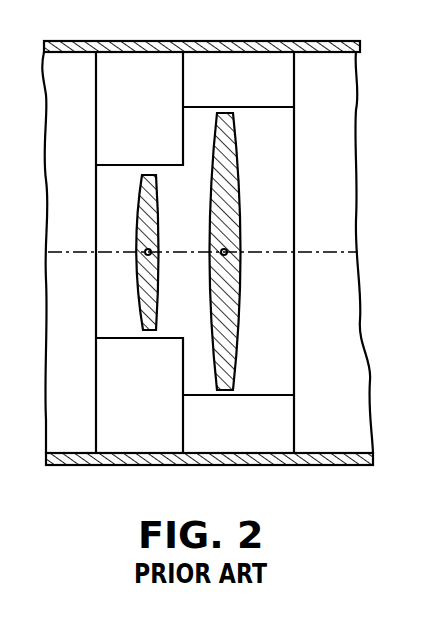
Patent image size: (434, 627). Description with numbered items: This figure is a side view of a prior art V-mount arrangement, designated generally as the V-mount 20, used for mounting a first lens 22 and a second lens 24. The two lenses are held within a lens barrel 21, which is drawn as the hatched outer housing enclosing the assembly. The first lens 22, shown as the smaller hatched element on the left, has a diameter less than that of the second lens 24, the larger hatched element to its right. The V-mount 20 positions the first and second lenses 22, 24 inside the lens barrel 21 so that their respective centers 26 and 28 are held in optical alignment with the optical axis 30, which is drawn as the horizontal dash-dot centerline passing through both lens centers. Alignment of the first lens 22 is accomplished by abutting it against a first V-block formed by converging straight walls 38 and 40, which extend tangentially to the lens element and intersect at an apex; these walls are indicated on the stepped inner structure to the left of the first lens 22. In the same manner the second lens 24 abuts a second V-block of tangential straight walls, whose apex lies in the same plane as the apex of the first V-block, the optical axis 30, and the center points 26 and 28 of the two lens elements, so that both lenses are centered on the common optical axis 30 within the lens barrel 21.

The V-mount arrangement 20 is at (310, 116).
The lens barrel 21 is at (314, 41).
The first lens 22 is at (155, 206).
The second lens 24 is at (239, 177).
The center of first lens 26 is at (151, 250).
The center of second lens 28 is at (227, 250).
The optical axis 30 is at (282, 254).
The converging straight wall 38 is at (108, 205).
The converging straight wall 40 is at (112, 284).